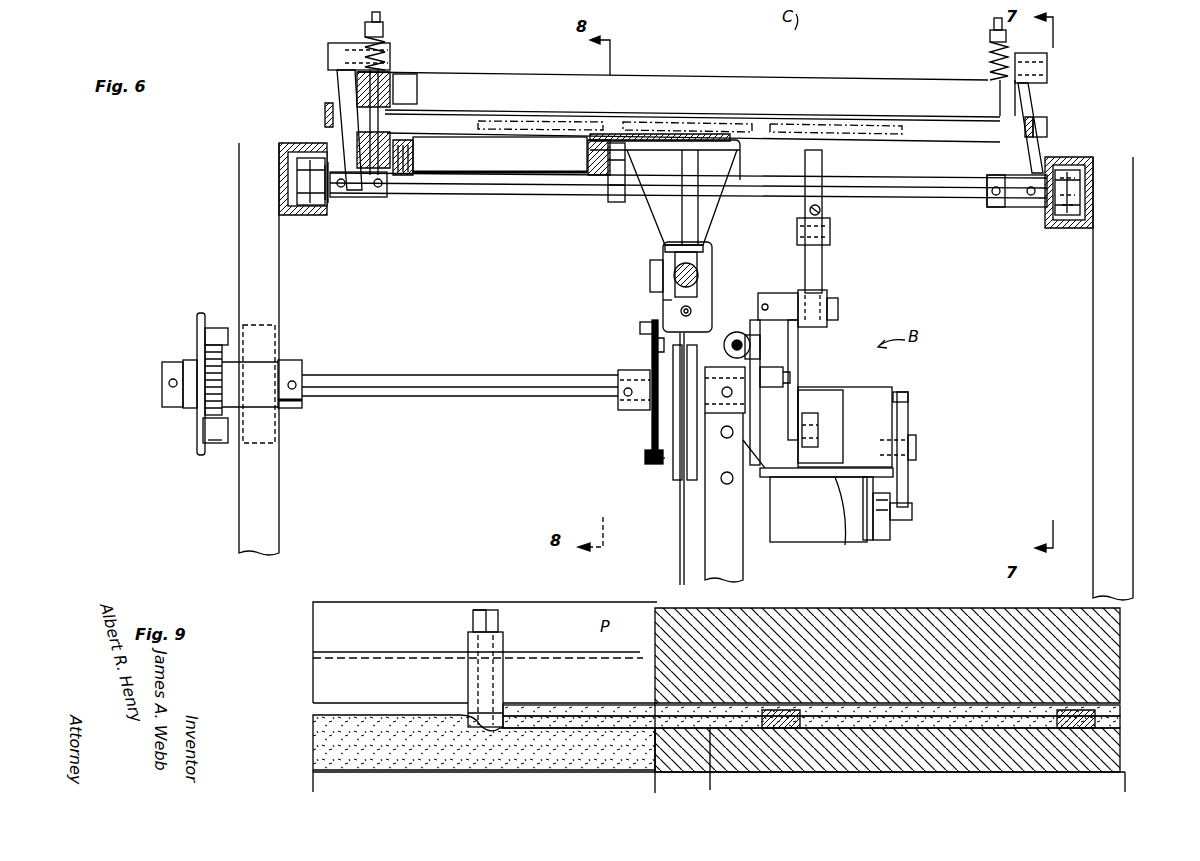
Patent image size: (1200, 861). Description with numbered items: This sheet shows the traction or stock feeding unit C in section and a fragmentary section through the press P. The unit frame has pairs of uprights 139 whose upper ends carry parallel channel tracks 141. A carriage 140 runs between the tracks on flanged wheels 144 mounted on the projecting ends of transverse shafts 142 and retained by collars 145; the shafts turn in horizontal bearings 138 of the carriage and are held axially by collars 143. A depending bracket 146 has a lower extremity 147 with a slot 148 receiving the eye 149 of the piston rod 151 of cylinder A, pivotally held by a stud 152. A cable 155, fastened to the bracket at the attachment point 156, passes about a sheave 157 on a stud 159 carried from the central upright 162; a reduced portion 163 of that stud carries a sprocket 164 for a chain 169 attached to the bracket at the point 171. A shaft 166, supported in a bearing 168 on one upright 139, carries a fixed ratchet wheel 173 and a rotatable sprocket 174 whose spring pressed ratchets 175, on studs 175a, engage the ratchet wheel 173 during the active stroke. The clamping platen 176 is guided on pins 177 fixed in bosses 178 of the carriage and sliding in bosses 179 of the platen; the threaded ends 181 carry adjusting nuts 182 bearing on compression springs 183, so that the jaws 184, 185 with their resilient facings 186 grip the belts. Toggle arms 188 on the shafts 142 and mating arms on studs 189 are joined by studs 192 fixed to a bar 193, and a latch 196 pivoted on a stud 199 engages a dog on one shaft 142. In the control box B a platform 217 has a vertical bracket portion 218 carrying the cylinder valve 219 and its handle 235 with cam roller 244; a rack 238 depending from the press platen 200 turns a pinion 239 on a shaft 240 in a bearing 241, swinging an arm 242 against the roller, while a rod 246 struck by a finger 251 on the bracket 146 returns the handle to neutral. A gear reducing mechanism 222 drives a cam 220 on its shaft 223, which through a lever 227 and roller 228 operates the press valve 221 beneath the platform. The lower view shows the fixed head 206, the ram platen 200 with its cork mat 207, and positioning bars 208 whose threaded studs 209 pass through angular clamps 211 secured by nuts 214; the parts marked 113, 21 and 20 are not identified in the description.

In FIG. 6, the uprights 139 is at (239, 217).
In FIG. 6, the channels or tracks 141 is at (284, 150).
In FIG. 6, the flanged wheels 144 is at (322, 212).
In FIG. 6, the collars 145 is at (1085, 200).
In FIG. 6, the transverse shafts 142 is at (545, 188).
In FIG. 6, the horizontal bearings 138 is at (355, 197).
In FIG. 6, the collars 143 is at (993, 209).
In FIG. 6, the platen 176 is at (725, 85).
In FIG. 6, the jaw of the carriage 184 is at (437, 130).
In FIG. 6, the jaw of the platen 185 is at (480, 120).
In FIG. 6, the facings 186 is at (497, 115).
In FIG. 6, the carriage 140 is at (500, 154).
In FIG. 6, the vertical guide pins 177 is at (405, 165).
In FIG. 6, the bosses 178 is at (408, 172).
In FIG. 6, the stud 199 is at (592, 178).
In FIG. 6, the latch 196 is at (620, 204).
In FIG. 6, the threaded end 181 is at (380, 22).
In FIG. 6, the adjusting nuts 182 is at (366, 30).
In FIG. 6, the compression springs 183 is at (385, 50).
In FIG. 6, the studs 189 is at (328, 50).
In FIG. 6, the bosses 179 is at (357, 82).
In FIG. 6, the arms 188 is at (340, 100).
In FIG. 6, the bar 193 is at (325, 113).
In FIG. 6, the stud 192 is at (1048, 127).
In FIG. 6, the depending bracket 146 is at (665, 196).
In FIG. 6, the piston rod 151 is at (705, 280).
In FIG. 6, the eye 149 is at (697, 268).
In FIG. 6, the slot 148 is at (690, 265).
In FIG. 6, the stud 152 is at (650, 272).
In FIG. 6, the cable attachment point 156 is at (681, 313).
In FIG. 6, the lower extremity 147 is at (655, 300).
In FIG. 6, the cable 155 is at (675, 310).
In FIG. 6, the chain attachment point 171 is at (640, 327).
In FIG. 6, the finger 251 is at (660, 345).
In FIG. 6, the shaft 166 is at (478, 352).
In FIG. 6, the sprocket 174 is at (200, 320).
In FIG. 6, the ratchet wheel 173 is at (215, 355).
In FIG. 6, the bearing 168 is at (236, 335).
In FIG. 6, the studs 175a is at (205, 430).
In FIG. 6, the spring pressed ratchets 175 is at (213, 443).
In FIG. 6, the stud 159 is at (625, 410).
In FIG. 6, the reduced portion 163 is at (640, 420).
In FIG. 6, the sprocket 164 is at (650, 455).
In FIG. 6, the chain 169 is at (648, 464).
In FIG. 6, the sheave 157 is at (673, 478).
In FIG. 6, the upright 162 is at (745, 555).
In FIG. 6, the rack 238 is at (822, 263).
In FIG. 6, the pinion 239 is at (827, 295).
In FIG. 6, the shaft 240 is at (838, 308).
In FIG. 6, the bearing 241 is at (795, 296).
In FIG. 6, the rod 246 is at (742, 340).
In FIG. 6, the arm 242 is at (770, 342).
In FIG. 6, the vertical bracket portion 218 is at (775, 360).
In FIG. 6, the valve operating handle 235 is at (765, 395).
In FIG. 6, the cam roller 244 is at (835, 400).
In FIG. 6, the operating valve 219 is at (875, 385).
In FIG. 6, the cam 220 is at (908, 420).
In FIG. 6, the motor operated gear reducing mechanism 222 is at (908, 395).
In FIG. 6, the driven shaft 223 is at (916, 440).
In FIG. 6, the operating valve 221 is at (820, 528).
In FIG. 6, the platform 217 is at (843, 543).
In FIG. 6, the lever 227 is at (882, 542).
In FIG. 6, the cam roller 228 is at (910, 520).
In FIG. 9, the fixed head 206 is at (318, 628).
In FIG. 9, the angular clamp 211 is at (505, 645).
In FIG. 9, the vertical threaded studs 209 is at (490, 610).
In FIG. 9, the nut 214 is at (470, 620).
In FIG. 9, the block 113 is at (887, 704).
In FIG. 9, the strip 21 is at (573, 705).
In FIG. 9, the strip 20 is at (570, 730).
In FIG. 9, the cemented cork mat 207 is at (313, 745).
In FIG. 9, the ram operated platen 200 is at (313, 777).
In FIG. 9, the positioning bars 208 is at (480, 730).